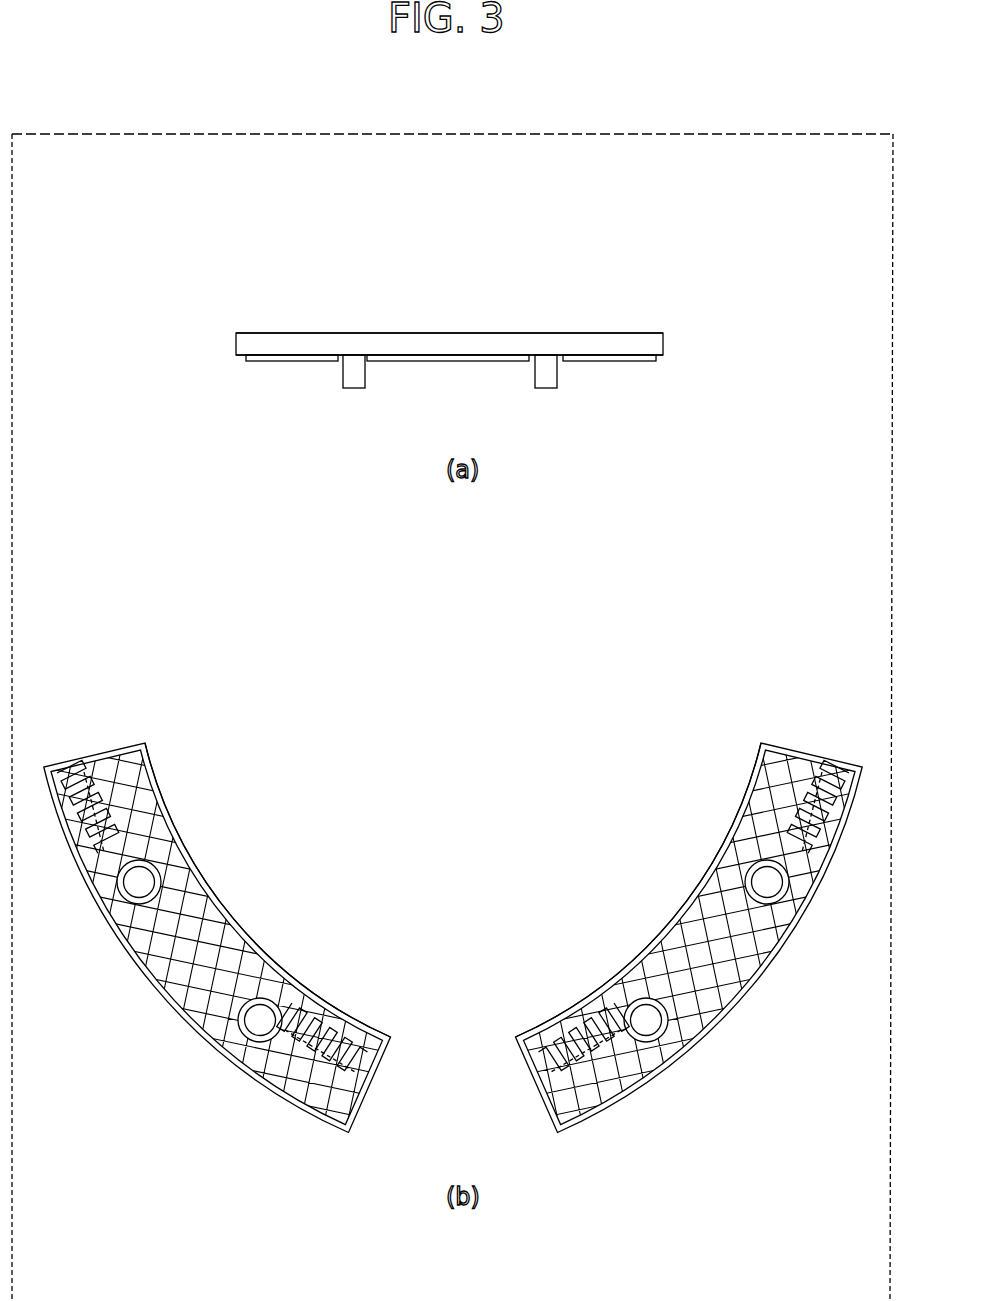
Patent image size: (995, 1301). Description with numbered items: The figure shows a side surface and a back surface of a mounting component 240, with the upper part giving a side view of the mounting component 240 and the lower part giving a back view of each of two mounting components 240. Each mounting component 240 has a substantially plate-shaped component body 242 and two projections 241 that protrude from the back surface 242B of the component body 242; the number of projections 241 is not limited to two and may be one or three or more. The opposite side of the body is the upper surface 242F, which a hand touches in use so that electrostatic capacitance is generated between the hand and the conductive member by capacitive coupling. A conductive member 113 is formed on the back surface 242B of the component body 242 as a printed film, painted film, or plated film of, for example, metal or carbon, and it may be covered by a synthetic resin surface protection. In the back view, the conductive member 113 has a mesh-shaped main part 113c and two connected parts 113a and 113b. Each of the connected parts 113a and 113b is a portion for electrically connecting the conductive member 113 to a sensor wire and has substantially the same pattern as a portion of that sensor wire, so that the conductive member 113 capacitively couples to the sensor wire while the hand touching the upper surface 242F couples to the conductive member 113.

The mounting component 240 is at (218, 308).
The projection 241 is at (341, 380).
The component body 242 is at (663, 340).
The upper surface 242F is at (582, 328).
The back surface 242B is at (655, 362).
The conductive member 113 is at (398, 365).
The connected part 113a is at (63, 770).
The connected part 113b is at (370, 1030).
The mesh-shaped main part 113c is at (222, 1043).